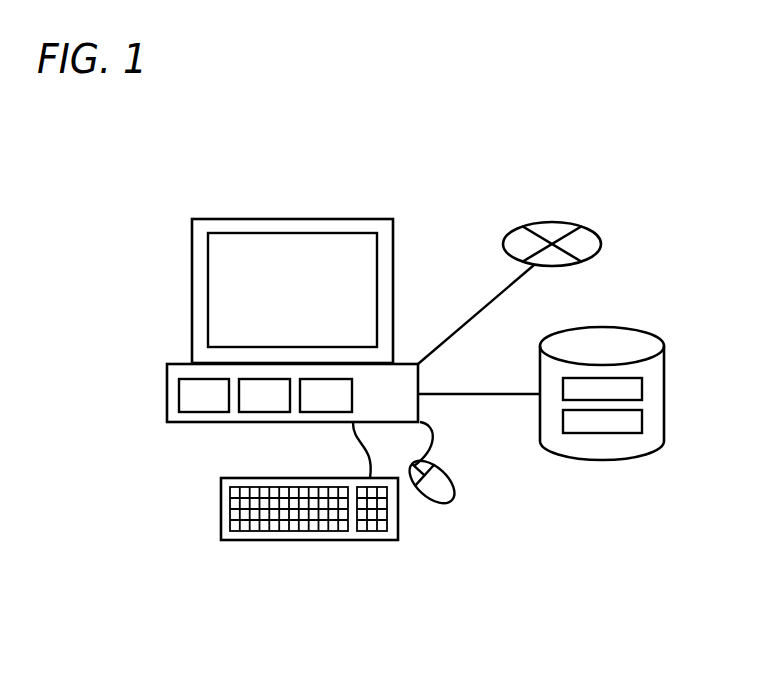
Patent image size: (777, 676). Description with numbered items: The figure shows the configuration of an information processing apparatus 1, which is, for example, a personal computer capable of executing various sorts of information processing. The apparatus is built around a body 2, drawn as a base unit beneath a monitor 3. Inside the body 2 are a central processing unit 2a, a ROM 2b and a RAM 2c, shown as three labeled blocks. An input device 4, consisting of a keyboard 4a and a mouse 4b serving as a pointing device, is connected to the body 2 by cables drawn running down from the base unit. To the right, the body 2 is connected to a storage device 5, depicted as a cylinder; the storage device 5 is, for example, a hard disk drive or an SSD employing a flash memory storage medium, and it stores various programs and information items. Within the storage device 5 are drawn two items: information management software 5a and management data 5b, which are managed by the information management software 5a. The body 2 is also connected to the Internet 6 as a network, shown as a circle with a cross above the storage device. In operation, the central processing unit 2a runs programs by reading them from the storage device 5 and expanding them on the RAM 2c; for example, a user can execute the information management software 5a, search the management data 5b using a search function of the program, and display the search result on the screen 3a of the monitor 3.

The information processing apparatus 1 is at (441, 194).
The body 2 is at (167, 372).
The central processing unit 2a is at (193, 413).
The ROM 2b is at (267, 413).
The RAM 2c is at (332, 413).
The monitor 3 is at (192, 238).
The screen 3a is at (256, 251).
The input device 4 is at (227, 602).
The keyboard 4a is at (219, 529).
The mouse 4b is at (432, 505).
The storage device 5 is at (641, 332).
The information management software 5a is at (642, 388).
The management data 5b is at (642, 423).
The Internet 6 is at (560, 222).